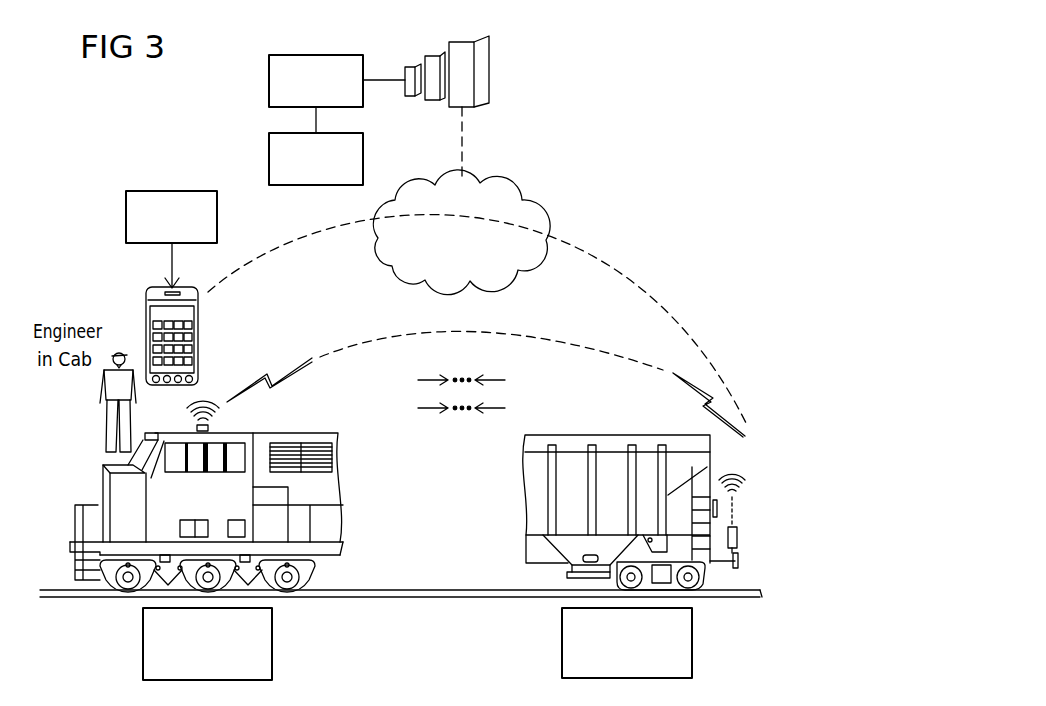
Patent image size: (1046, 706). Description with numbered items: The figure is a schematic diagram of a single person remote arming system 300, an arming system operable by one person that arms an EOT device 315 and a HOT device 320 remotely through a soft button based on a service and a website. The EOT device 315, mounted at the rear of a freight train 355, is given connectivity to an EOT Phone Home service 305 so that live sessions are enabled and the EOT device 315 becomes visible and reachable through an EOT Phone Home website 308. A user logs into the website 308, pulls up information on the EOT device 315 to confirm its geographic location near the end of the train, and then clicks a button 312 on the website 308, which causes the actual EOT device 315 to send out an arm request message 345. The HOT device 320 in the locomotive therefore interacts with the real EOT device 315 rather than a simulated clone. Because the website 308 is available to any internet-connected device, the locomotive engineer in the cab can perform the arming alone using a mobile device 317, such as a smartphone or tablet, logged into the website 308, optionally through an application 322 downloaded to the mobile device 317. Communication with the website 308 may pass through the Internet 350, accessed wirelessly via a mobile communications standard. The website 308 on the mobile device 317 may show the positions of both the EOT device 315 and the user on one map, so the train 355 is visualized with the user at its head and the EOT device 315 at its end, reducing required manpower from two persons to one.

The single person remote arming system 300 is at (741, 65).
The EOT Phone Home (EOTPH) service 305 is at (490, 42).
The EOT Phone Home (EOTPH) website 308 is at (269, 81).
The button 312 is at (269, 159).
The EOT device 315 is at (692, 640).
The mobile device 317 is at (146, 294).
The HOT device 320 is at (143, 643).
The application (APP) 322 is at (126, 216).
The arm request message 345 is at (503, 409).
The Internet 350 is at (510, 192).
The freight train 355 is at (425, 561).